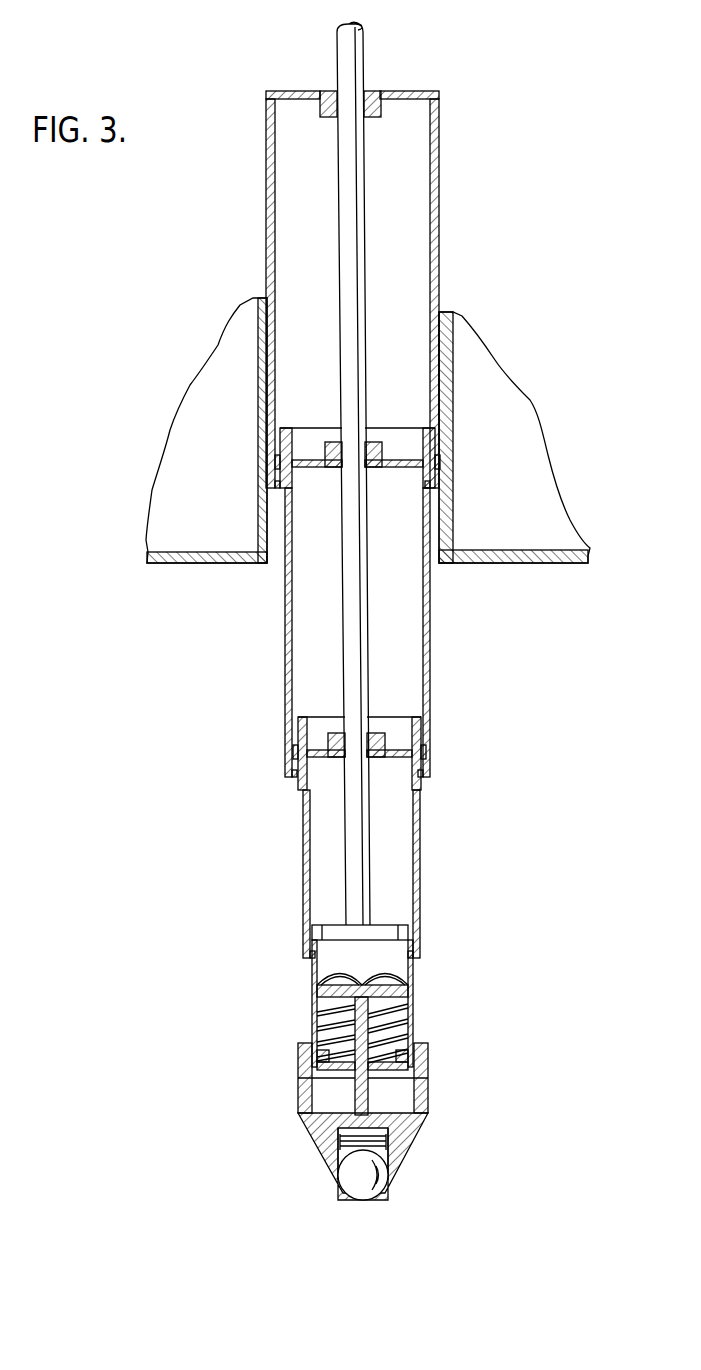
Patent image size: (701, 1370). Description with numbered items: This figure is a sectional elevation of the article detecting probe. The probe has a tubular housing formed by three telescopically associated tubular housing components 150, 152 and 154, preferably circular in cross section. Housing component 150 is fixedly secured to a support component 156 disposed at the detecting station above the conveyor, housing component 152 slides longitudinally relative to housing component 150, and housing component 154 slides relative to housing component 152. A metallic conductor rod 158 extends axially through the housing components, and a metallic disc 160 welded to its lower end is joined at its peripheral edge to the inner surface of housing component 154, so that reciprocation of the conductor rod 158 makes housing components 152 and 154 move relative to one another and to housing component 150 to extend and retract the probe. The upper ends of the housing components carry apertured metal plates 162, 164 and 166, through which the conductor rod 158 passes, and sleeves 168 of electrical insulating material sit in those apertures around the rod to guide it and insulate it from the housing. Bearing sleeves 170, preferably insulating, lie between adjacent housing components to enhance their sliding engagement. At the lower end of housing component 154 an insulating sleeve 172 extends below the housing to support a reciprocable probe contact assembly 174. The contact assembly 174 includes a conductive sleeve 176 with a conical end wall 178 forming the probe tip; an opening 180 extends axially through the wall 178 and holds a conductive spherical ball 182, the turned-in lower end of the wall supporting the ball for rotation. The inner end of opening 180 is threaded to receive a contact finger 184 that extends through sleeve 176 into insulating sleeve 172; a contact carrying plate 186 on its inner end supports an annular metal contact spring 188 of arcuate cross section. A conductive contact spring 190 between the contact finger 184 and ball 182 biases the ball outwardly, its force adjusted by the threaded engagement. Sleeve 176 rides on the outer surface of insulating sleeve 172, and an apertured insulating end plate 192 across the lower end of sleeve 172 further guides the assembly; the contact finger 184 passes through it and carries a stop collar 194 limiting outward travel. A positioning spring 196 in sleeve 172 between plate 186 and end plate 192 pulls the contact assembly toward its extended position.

The tubular housing component 150 is at (439, 213).
The tubular housing component 152 is at (431, 643).
The tubular housing component 154 is at (421, 845).
The support component 156 is at (185, 456).
The metallic conductor rod 158 is at (358, 268).
The metallic disc 160 is at (410, 930).
The apertured metal plate 162 is at (403, 92).
The apertured metal plate 164 is at (425, 458).
The apertured metal plate 166 is at (419, 722).
The sleeve of electrical insulating material 168 is at (366, 92).
The bearing sleeve 170 is at (439, 460).
The sleeve of electrical insulating material 172 is at (411, 980).
The probe contact assembly 174 is at (402, 1179).
The sleeve of conductive material 176 is at (429, 1058).
The conical end wall 178 is at (416, 1130).
The opening 180 is at (390, 1143).
The spherical ball 182 is at (352, 1183).
The contact finger 184 is at (322, 1078).
The contact carrying plate 186 is at (318, 997).
The annular metal contact spring 188 is at (318, 977).
The contact spring 190 is at (338, 1150).
The apertured end plate 192 is at (392, 1068).
The stop collar 194 is at (369, 1052).
The positioning spring 196 is at (400, 1020).